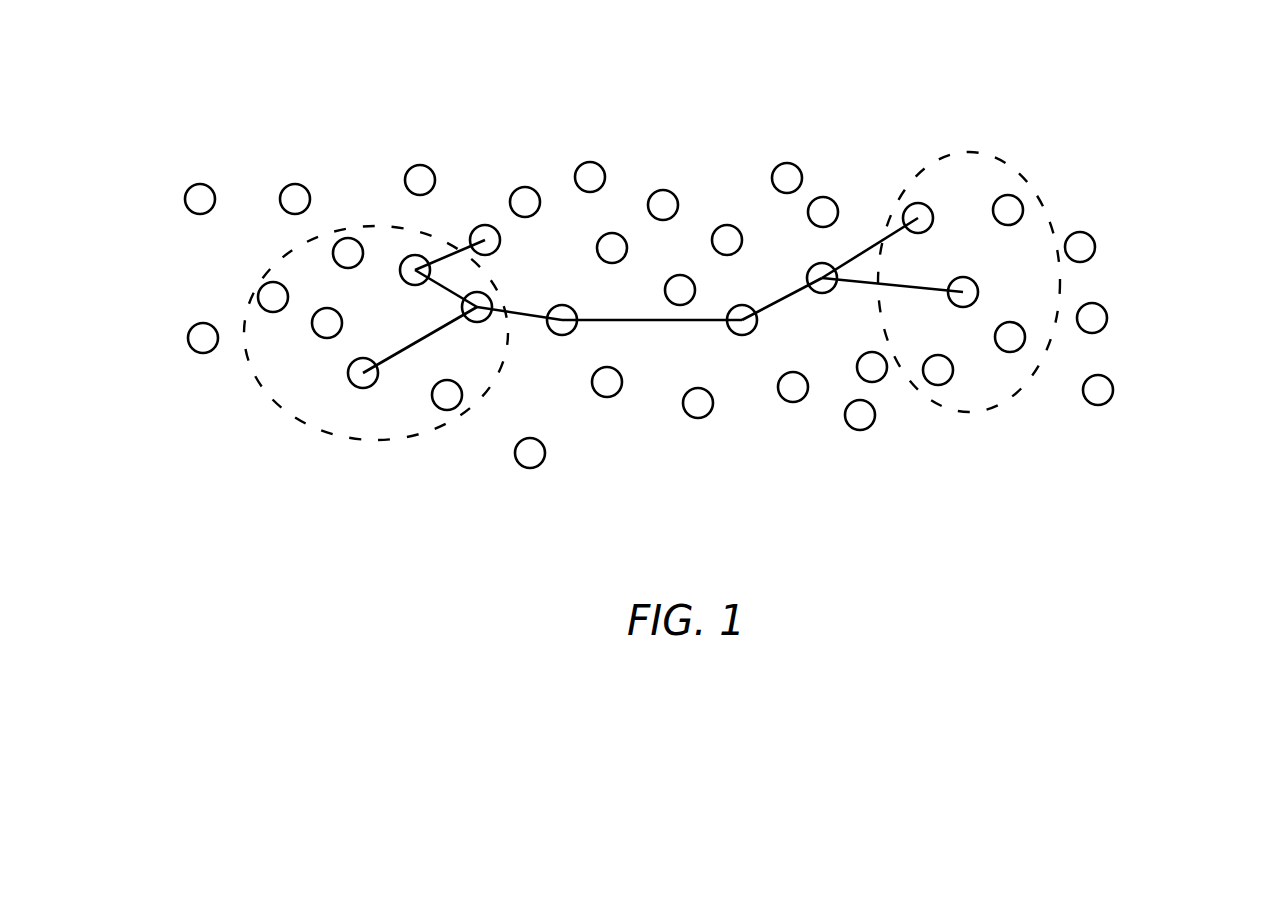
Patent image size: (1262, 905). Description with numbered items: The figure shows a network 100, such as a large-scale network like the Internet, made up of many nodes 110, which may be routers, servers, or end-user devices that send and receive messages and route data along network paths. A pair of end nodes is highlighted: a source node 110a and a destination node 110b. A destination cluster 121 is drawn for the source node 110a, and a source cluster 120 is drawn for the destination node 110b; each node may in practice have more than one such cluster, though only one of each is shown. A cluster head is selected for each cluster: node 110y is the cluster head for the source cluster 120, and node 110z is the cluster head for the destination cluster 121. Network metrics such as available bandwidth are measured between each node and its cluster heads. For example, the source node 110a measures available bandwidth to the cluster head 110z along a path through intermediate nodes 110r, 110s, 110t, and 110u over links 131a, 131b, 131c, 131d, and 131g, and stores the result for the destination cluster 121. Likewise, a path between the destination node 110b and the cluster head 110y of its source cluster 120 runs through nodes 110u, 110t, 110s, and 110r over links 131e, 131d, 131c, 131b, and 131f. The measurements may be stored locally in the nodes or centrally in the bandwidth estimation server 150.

The network 100 is at (710, 30).
The nodes 110 is at (665, 135).
The source node 110a is at (348, 378).
The destination node 110b is at (963, 307).
The node 110r is at (475, 322).
The node 110s is at (560, 335).
The node 110t is at (741, 335).
The node 110u is at (822, 293).
The cluster head 110y is at (416, 255).
The cluster head 110z is at (911, 204).
The source cluster 120 is at (260, 292).
The destination cluster 121 is at (1027, 176).
The link 131a is at (423, 340).
The link 131b is at (523, 313).
The link 131c is at (672, 321).
The link 131d is at (777, 302).
The link 131e is at (902, 286).
The link 131f is at (440, 285).
The link 131g is at (878, 242).
The bandwidth estimation server 150 is at (545, 455).